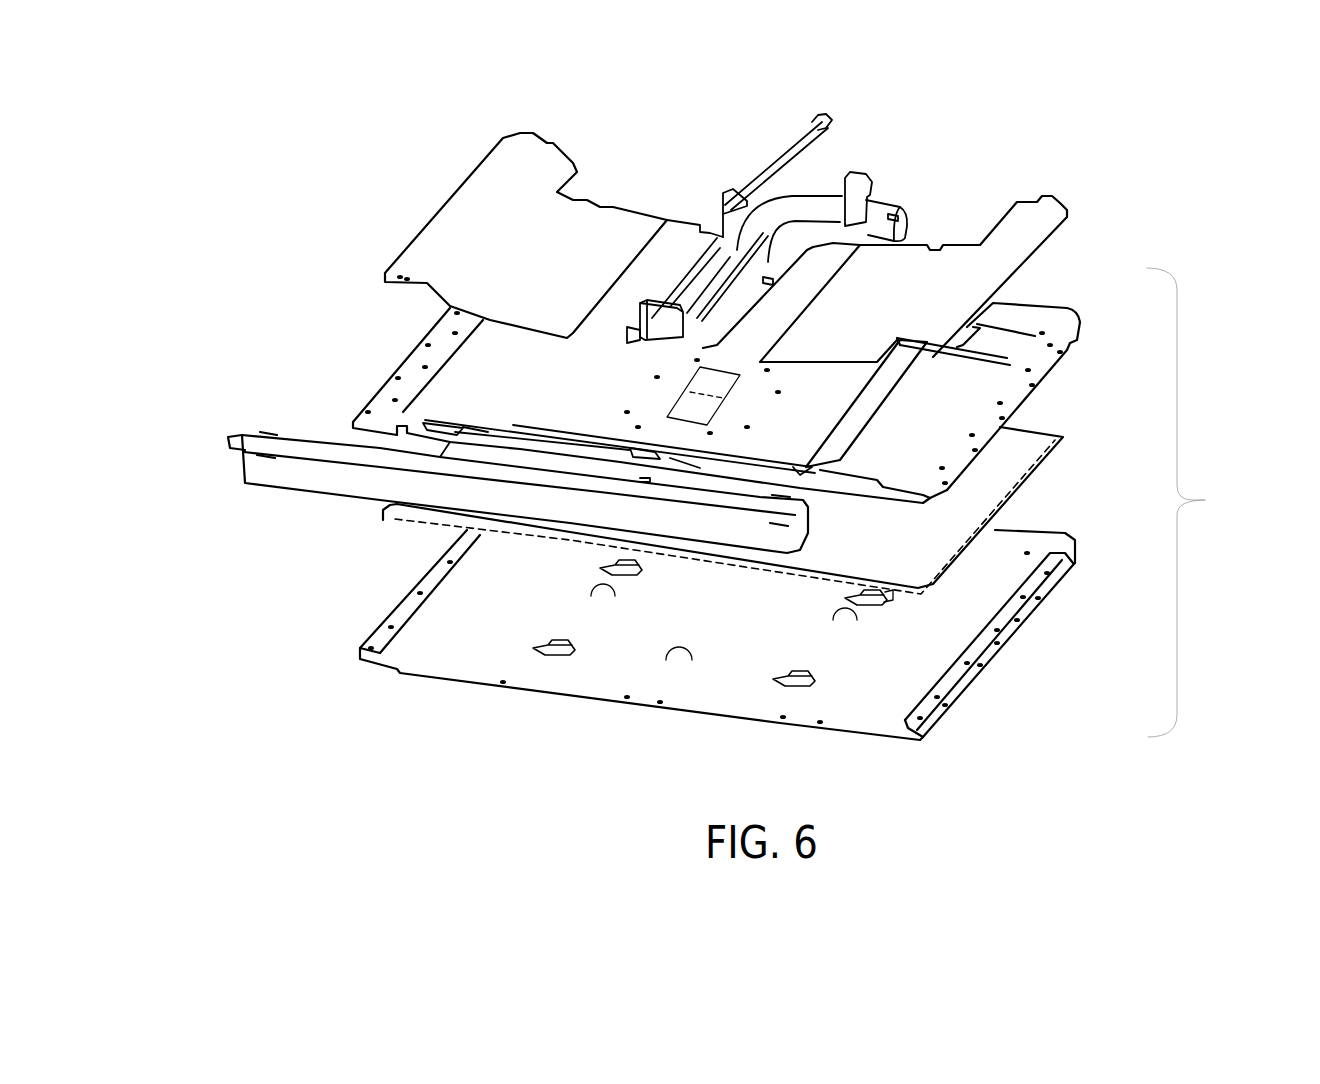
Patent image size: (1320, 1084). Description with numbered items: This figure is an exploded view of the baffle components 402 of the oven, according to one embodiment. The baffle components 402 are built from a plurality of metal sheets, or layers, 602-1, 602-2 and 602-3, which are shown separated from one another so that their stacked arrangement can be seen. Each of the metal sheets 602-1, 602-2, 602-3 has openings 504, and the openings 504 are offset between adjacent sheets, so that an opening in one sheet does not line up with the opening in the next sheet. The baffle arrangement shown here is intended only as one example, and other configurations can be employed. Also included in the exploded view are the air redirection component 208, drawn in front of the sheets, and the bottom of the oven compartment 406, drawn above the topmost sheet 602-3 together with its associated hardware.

The baffle components 402 is at (803, 427).
The metal sheet 602-1 is at (1040, 530).
The metal sheet 602-2 is at (1038, 427).
The metal sheet 602-3 is at (1040, 305).
The bottom of the oven compartment 406 is at (541, 162).
The air redirection component 208 is at (253, 470).
The openings 504 is at (620, 412).